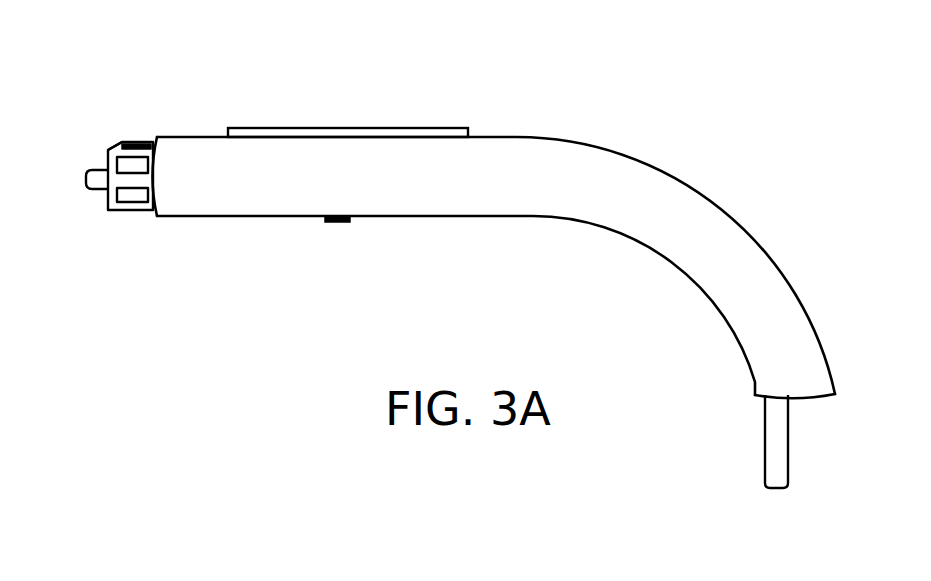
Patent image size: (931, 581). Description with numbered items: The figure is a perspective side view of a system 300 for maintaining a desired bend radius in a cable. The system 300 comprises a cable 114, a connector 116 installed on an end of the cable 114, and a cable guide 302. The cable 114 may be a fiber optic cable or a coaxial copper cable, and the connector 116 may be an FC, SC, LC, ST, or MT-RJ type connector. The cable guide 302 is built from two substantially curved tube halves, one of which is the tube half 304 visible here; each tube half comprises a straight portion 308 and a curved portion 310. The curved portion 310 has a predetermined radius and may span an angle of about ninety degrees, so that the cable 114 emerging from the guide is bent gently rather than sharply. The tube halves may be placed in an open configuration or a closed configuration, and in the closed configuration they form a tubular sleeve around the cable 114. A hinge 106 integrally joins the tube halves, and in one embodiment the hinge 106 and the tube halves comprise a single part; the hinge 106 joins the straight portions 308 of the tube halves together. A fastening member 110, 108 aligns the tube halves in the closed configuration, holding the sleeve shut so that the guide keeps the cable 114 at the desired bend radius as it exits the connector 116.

The system 300 is at (102, 72).
The cable guide 302 is at (383, 118).
The connector 116 is at (118, 141).
The straight portion 308 is at (190, 160).
The hinge 106 is at (287, 128).
The fastening member 108 is at (334, 223).
The fastening member 110 is at (323, 219).
The tube half 304 is at (560, 162).
The curved portion 310 is at (682, 200).
The cable 114 is at (765, 438).